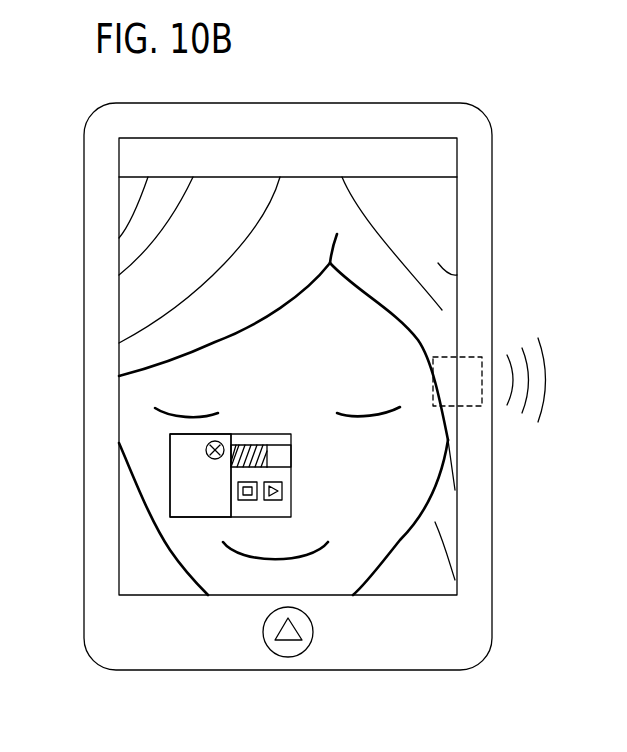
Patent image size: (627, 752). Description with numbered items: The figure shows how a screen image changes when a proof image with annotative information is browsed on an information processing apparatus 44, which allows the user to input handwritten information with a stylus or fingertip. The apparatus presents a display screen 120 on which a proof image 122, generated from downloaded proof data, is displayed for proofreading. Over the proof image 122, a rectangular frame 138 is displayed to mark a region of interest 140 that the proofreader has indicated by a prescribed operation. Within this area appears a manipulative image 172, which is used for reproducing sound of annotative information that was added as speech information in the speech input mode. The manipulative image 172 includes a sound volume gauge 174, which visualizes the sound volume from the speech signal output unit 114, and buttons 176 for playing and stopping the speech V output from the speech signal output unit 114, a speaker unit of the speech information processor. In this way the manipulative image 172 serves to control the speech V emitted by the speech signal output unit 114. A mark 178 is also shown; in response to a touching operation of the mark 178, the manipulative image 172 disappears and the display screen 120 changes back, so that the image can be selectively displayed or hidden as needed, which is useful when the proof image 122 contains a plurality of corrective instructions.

The information processing apparatus 44 is at (344, 73).
The display screen 120 is at (475, 207).
The proof image 122 is at (438, 263).
The speech signal output unit 114 is at (468, 352).
The speech V is at (548, 397).
The rectangular frame 138 is at (170, 485).
The region of interest 140 is at (192, 505).
The mark 178 is at (206, 452).
The manipulative image 172 is at (355, 435).
The sound volume gauge 174 is at (286, 455).
The buttons 176 is at (286, 492).